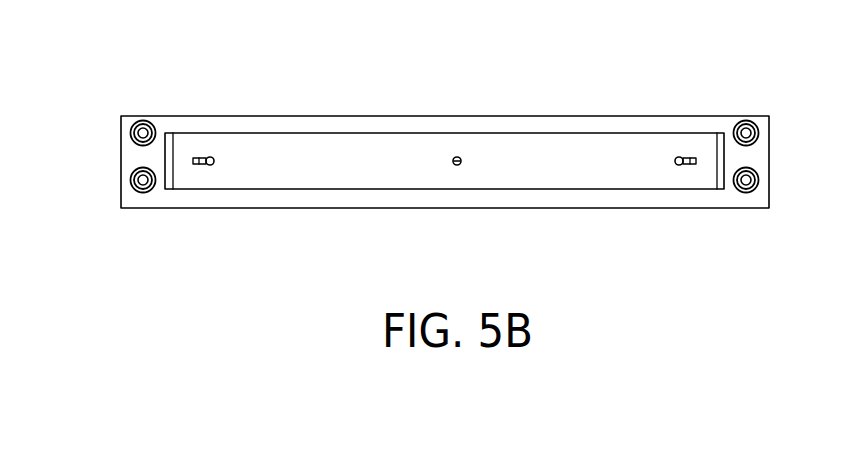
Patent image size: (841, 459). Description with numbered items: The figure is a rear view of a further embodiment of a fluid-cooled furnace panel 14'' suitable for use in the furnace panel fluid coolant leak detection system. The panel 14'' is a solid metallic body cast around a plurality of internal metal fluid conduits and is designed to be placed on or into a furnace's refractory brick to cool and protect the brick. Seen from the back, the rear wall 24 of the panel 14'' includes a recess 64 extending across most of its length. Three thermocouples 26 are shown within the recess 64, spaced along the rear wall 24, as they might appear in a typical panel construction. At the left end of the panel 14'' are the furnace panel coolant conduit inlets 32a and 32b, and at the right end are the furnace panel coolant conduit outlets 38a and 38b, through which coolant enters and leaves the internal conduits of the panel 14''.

The furnace panel 14'' is at (445, 131).
The rear wall 24 is at (292, 118).
The thermocouples 26 is at (210, 166).
The furnace panel coolant conduit inlet 32a is at (137, 121).
The furnace panel coolant conduit inlet 32b is at (137, 193).
The furnace panel coolant conduit outlet 38a is at (751, 121).
The furnace panel coolant conduit outlet 38b is at (750, 193).
The recess 64 is at (337, 160).